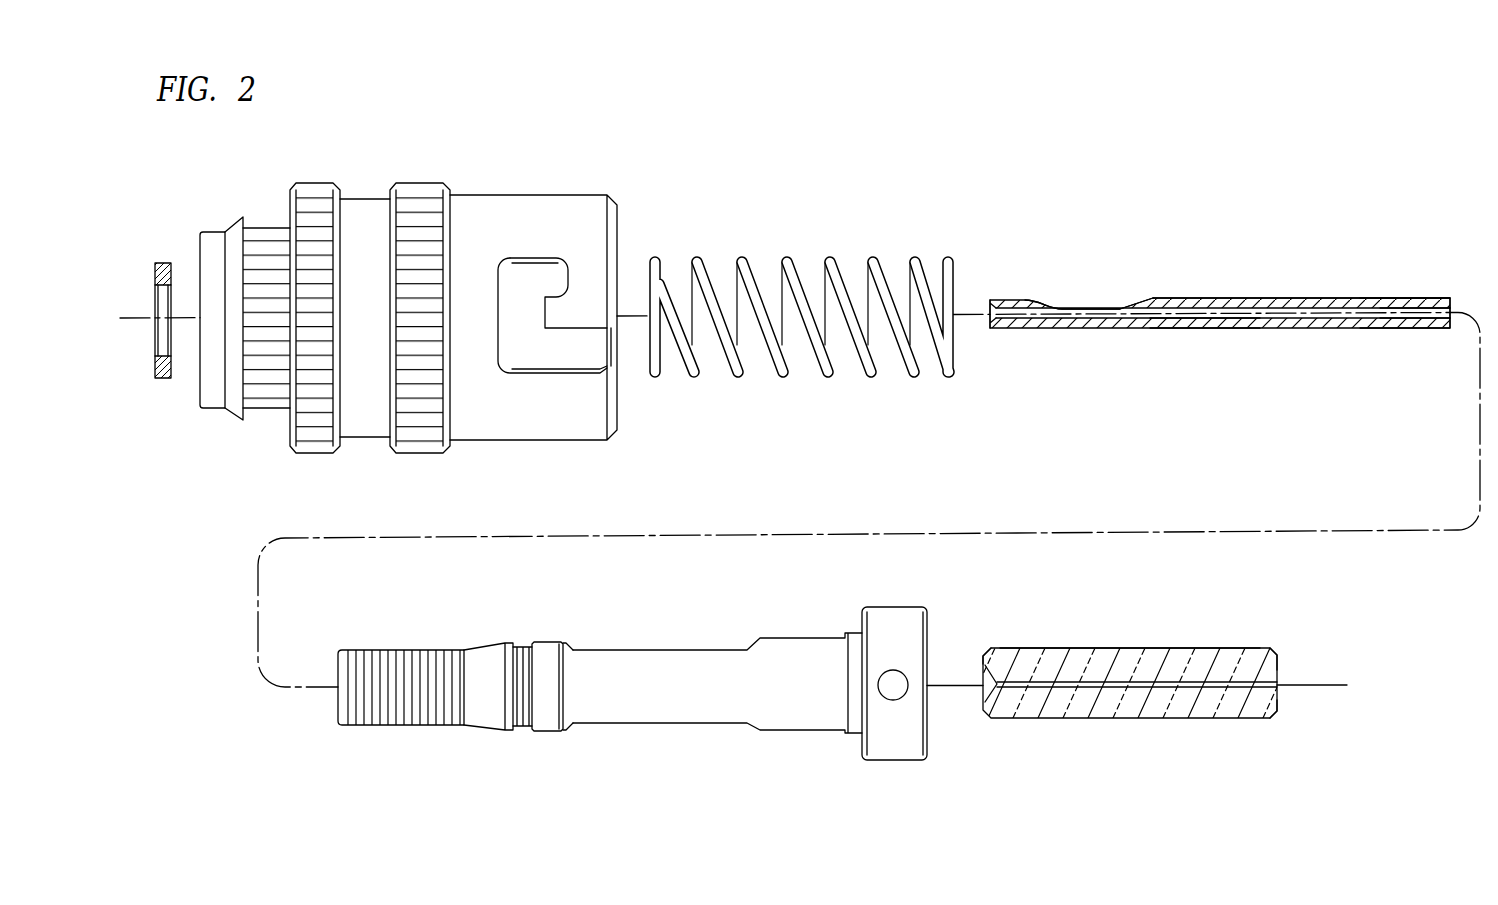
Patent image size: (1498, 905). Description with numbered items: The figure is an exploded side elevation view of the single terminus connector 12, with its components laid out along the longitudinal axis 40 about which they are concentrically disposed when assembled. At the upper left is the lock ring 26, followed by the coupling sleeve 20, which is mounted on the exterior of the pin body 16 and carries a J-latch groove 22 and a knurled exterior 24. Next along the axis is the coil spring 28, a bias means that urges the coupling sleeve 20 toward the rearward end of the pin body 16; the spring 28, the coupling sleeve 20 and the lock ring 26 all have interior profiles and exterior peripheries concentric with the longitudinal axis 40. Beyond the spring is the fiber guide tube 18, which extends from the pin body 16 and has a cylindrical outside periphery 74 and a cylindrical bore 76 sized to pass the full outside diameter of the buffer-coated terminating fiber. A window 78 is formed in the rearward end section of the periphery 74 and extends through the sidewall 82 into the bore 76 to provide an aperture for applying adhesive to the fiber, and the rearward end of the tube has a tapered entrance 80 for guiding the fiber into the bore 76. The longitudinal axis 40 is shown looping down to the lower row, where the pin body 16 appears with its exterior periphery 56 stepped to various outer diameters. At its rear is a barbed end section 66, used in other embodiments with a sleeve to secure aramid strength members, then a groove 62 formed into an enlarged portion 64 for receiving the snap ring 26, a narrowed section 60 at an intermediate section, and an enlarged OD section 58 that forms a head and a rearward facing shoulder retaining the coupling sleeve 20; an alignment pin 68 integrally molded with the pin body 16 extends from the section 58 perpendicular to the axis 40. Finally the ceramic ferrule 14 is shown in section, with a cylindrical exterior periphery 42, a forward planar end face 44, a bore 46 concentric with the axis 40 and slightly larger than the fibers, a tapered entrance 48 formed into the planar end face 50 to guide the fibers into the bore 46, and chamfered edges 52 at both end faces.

The single terminus connector 12 is at (1210, 298).
The ferrule 14 is at (1137, 687).
The pin body 16 is at (634, 705).
The guide tube 18 is at (1254, 290).
The coupling sleeve 20 is at (408, 293).
The J-latch groove 22 is at (556, 370).
The knurled exterior 24 is at (416, 188).
The lock ring 26 is at (162, 262).
The coil spring 28 is at (866, 262).
The longitudinal axis 40 is at (1480, 370).
The cylindrical exterior periphery 42 is at (1065, 650).
The forward planar end face 44 is at (1278, 662).
The bore 46 is at (1053, 690).
The tapered entrance 48 is at (985, 694).
The planar end face 50 is at (985, 660).
The chamfered edges 52 is at (1270, 720).
The exterior periphery 56 is at (705, 635).
The enlarged OD section 58 is at (885, 762).
The narrowed section 60 is at (635, 652).
The groove 62 is at (523, 728).
The enlarged portion 64 is at (546, 641).
The barbed end section 66 is at (405, 652).
The alignment pin 68 is at (891, 670).
The cylindrical outside periphery 74 is at (1360, 297).
The cylindrical bore 76 is at (1393, 312).
The window 78 is at (1056, 306).
The tapered entrance 80 is at (990, 316).
The sidewall 82 is at (1197, 328).